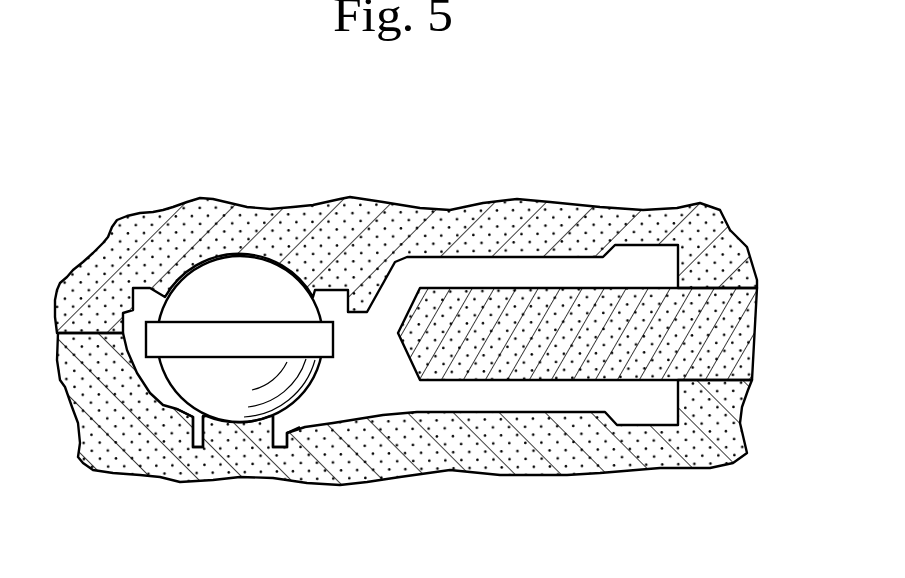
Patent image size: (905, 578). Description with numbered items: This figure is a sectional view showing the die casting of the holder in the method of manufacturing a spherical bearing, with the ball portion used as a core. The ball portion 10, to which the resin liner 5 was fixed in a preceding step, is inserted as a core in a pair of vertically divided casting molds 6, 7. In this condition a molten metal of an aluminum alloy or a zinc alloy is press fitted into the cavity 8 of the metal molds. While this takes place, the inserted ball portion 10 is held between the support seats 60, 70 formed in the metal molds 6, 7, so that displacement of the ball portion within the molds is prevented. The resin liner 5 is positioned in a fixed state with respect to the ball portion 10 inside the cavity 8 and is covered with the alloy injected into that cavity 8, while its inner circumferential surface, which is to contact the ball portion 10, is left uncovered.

The resin liner 5 is at (198, 328).
The casting mold 6 is at (313, 208).
The casting mold 7 is at (387, 473).
The cavity 8 is at (403, 282).
The ball portion 10 is at (172, 406).
The support seat 60 is at (250, 256).
The support seat 70 is at (300, 426).